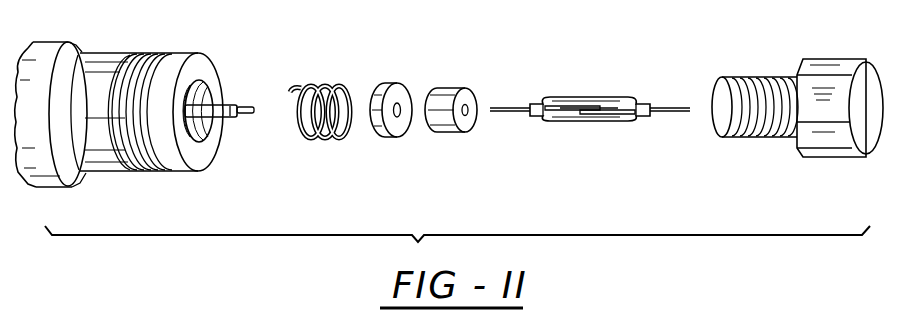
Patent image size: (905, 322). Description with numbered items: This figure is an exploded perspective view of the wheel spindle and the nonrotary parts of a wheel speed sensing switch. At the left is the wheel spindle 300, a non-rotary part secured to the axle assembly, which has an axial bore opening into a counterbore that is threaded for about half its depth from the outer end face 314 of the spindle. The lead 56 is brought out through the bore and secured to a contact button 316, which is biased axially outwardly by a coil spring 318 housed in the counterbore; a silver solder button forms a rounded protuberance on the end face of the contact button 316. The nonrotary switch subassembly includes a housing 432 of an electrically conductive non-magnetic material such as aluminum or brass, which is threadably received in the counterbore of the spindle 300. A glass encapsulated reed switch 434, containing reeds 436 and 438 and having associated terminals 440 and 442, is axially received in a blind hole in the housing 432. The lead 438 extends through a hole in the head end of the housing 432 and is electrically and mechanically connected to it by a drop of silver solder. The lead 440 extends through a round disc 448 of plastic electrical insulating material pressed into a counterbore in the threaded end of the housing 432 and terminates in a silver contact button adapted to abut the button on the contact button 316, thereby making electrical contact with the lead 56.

The wheel spindle 300 is at (70, 42).
The outer end face 314 is at (200, 65).
The lead 56 is at (237, 118).
The coil spring 318 is at (310, 87).
The contact button 316 is at (390, 136).
The round disc 448 is at (455, 88).
The terminal 440 is at (510, 112).
The reed 436 is at (555, 105).
The reed 438 is at (625, 107).
The glass encapsulated reed switch 434 is at (605, 118).
The terminal 442 is at (676, 112).
The housing 432 is at (820, 157).